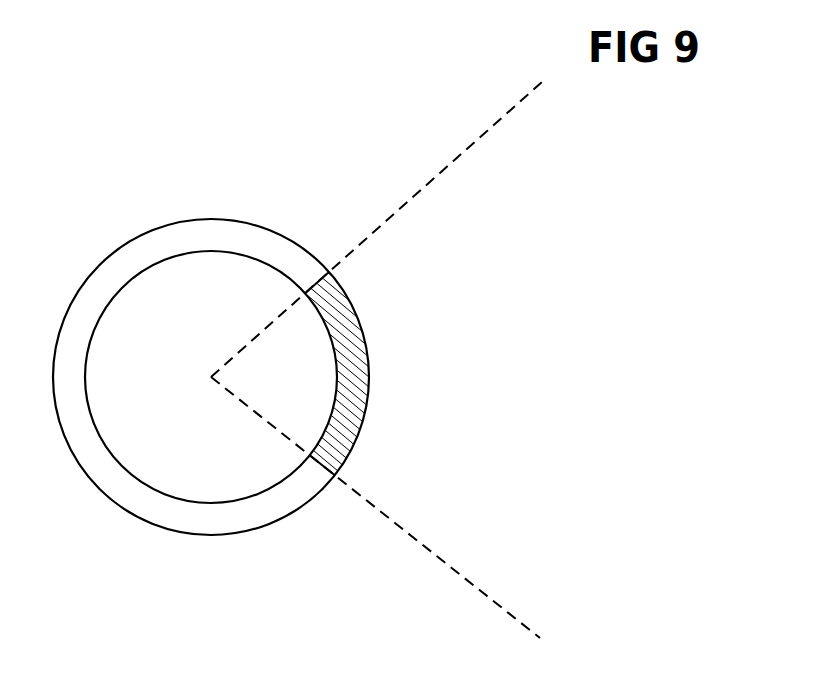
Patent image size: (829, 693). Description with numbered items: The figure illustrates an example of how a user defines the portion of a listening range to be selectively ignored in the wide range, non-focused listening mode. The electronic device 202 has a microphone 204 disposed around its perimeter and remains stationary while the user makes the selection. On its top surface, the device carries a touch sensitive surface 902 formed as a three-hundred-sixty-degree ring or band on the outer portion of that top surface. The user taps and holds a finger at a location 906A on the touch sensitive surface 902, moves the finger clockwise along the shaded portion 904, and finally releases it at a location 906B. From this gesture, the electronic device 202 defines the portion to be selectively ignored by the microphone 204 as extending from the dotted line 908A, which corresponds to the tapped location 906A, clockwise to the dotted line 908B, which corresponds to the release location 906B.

The electronic device 202 is at (224, 464).
The microphone 204 is at (211, 359).
The touch sensitive surface 902 is at (204, 400).
The shaded portion 904 is at (360, 368).
The location 906A is at (313, 246).
The location 906B is at (312, 503).
The dotted line 908A is at (378, 229).
The dotted line 908B is at (375, 507).